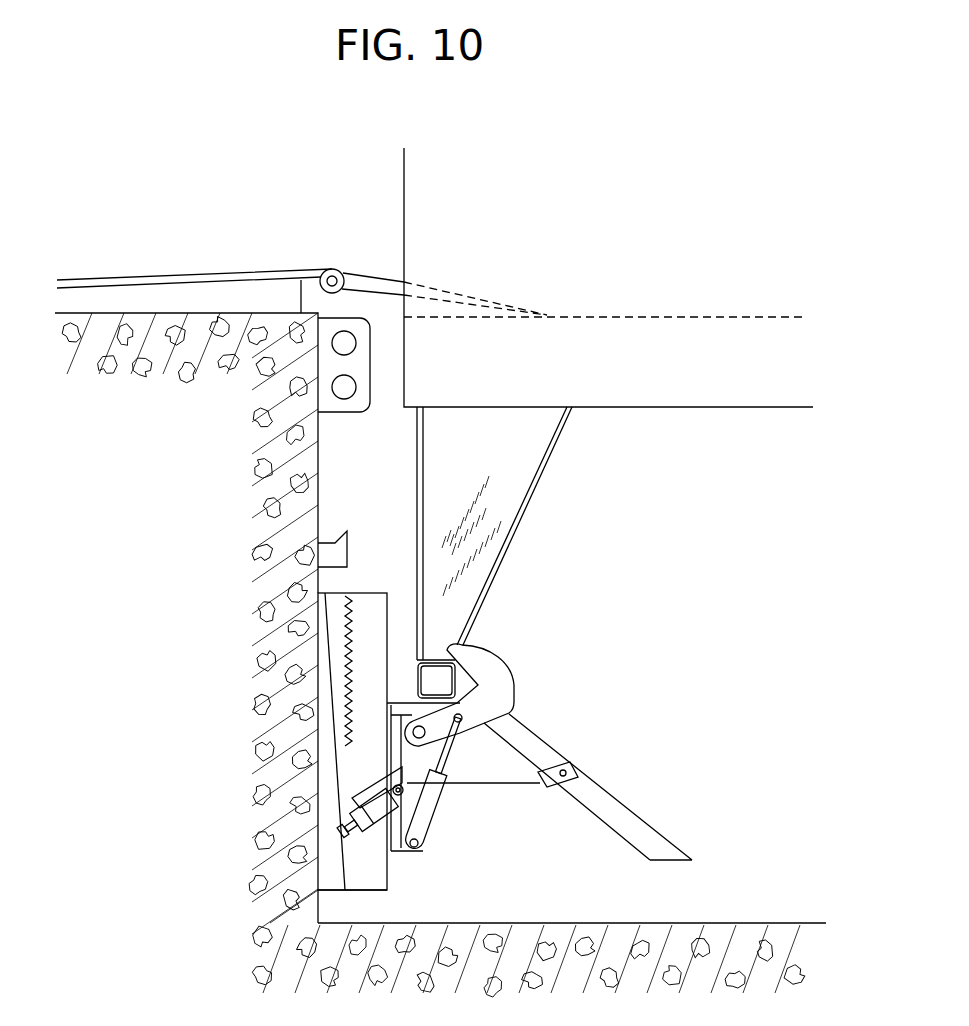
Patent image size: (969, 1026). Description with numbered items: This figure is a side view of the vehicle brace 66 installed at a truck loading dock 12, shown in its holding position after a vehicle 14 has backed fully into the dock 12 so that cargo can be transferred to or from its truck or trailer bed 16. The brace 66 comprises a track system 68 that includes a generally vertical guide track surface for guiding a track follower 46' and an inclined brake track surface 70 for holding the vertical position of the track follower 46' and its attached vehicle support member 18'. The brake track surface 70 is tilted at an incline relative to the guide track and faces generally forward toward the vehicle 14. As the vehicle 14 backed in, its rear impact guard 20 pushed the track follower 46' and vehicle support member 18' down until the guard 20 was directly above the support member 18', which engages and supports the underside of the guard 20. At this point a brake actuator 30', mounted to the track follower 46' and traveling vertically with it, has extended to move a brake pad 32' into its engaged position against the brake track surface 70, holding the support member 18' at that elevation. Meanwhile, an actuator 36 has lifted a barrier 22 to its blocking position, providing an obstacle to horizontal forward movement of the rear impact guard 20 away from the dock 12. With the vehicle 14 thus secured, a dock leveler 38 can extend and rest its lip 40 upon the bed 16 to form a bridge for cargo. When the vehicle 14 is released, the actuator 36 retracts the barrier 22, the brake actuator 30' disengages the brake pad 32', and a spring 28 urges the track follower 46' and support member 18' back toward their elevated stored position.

The truck loading dock 12 is at (588, 884).
The vehicle 14 is at (404, 212).
The truck or trailer bed 16 is at (637, 316).
The vehicle support member 18' is at (549, 633).
The rear impact guard 20 is at (433, 658).
The barrier 22 is at (513, 682).
The tension spring 28 is at (350, 630).
The brake actuator 30' is at (273, 835).
The brake pad 32' is at (253, 821).
The actuator 36 is at (435, 815).
The dock leveler 38 is at (172, 273).
The lip 40 is at (442, 287).
The track follower 46' is at (447, 793).
The vehicle brace 66 is at (703, 600).
The track system 68 is at (373, 891).
The brake track surface 70 is at (345, 780).